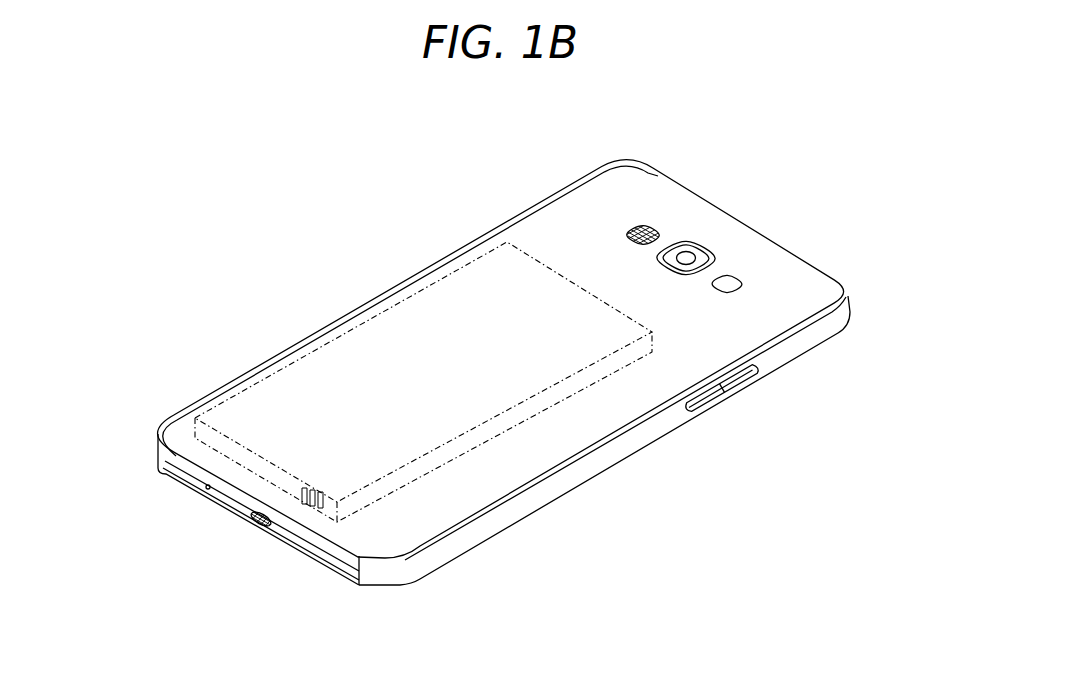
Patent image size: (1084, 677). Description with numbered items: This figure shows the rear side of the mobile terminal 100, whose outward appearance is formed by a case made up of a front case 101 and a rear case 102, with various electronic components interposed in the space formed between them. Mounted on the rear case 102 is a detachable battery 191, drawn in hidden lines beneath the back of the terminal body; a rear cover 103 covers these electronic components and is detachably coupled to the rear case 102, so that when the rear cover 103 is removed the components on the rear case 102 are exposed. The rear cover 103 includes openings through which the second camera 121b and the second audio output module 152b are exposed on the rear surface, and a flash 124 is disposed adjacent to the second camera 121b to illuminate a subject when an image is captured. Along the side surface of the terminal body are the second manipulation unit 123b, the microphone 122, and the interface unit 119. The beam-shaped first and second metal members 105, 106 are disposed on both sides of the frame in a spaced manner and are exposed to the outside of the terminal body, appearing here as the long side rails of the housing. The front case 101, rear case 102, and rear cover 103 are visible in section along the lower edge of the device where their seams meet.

The mobile terminal 100 is at (504, 407).
The front case 101 is at (297, 552).
The rear case 102 is at (328, 553).
The rear cover 103 is at (345, 558).
The first metal member 105 is at (592, 467).
The second metal member 106 is at (501, 359).
The interface unit 119 is at (252, 528).
The second camera 121b is at (688, 257).
The microphone 122 is at (207, 488).
The second manipulation unit 123b is at (707, 400).
The flash 124 is at (729, 282).
The second audio output module 152b is at (647, 227).
The battery 191 is at (283, 368).